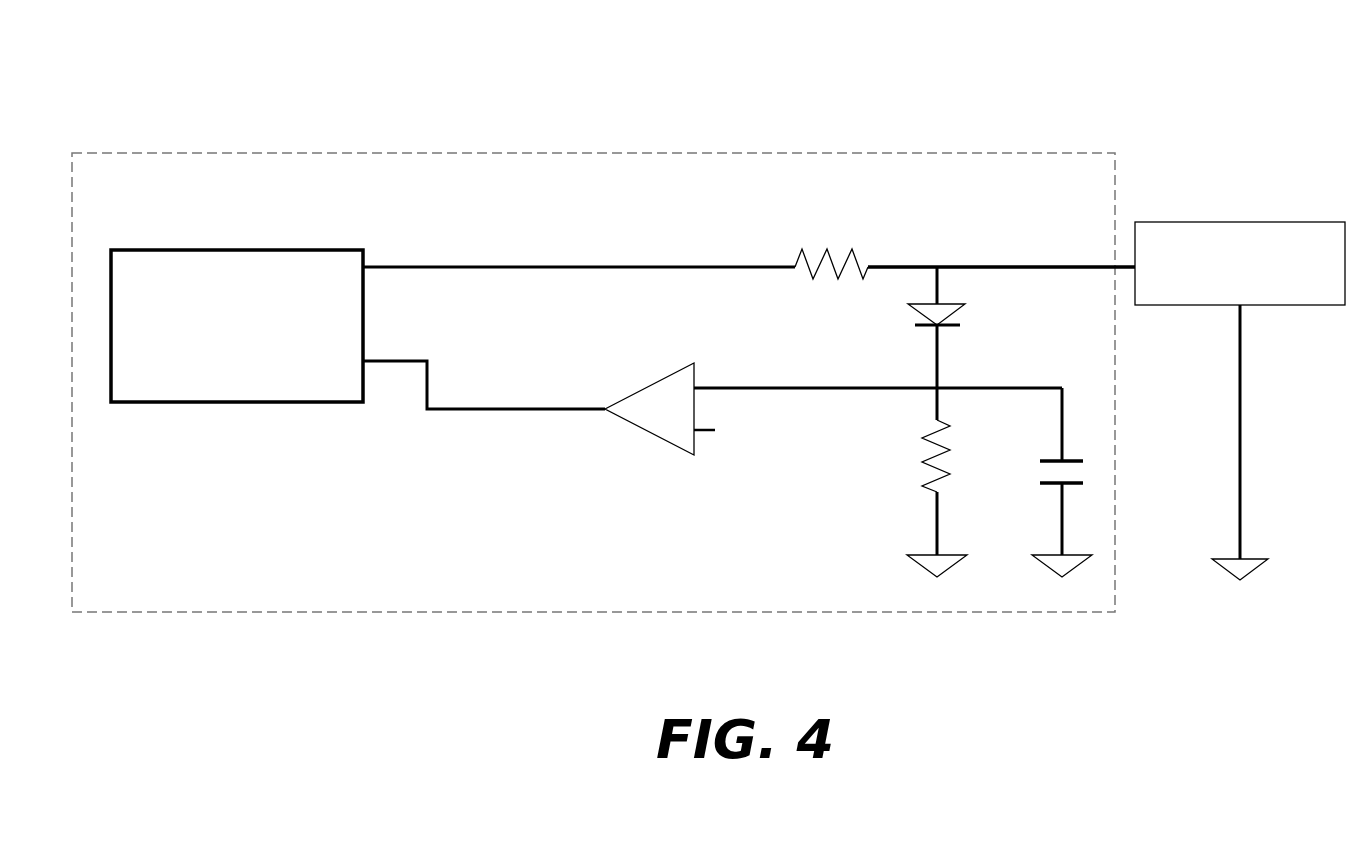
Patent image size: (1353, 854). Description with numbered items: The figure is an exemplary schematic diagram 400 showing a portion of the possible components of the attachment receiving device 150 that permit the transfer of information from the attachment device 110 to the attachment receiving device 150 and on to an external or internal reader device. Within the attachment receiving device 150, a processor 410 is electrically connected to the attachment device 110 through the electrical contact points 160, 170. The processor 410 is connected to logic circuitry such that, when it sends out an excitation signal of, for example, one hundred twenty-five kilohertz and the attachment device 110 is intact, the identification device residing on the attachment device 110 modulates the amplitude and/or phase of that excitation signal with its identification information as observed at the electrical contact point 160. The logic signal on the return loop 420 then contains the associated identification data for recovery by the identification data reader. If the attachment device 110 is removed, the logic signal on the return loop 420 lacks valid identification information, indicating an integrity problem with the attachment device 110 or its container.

The diagram 400 is at (773, 42).
The attachment receiving device 150 is at (428, 153).
The processor 410 is at (238, 248).
The electrical contact point 160 is at (990, 264).
The return loop 420 is at (505, 409).
The attachment device 110 is at (1242, 222).
The electrical contact point 170 is at (1240, 423).